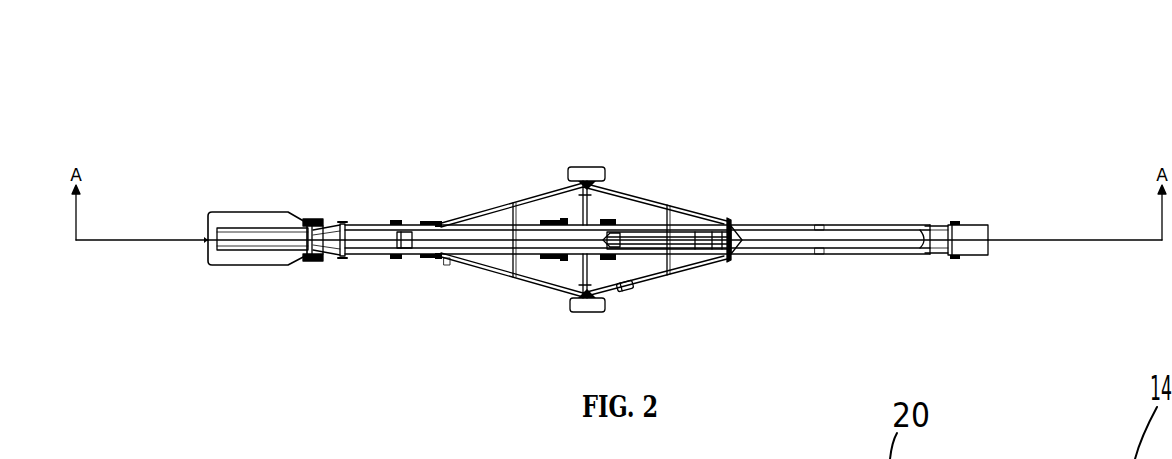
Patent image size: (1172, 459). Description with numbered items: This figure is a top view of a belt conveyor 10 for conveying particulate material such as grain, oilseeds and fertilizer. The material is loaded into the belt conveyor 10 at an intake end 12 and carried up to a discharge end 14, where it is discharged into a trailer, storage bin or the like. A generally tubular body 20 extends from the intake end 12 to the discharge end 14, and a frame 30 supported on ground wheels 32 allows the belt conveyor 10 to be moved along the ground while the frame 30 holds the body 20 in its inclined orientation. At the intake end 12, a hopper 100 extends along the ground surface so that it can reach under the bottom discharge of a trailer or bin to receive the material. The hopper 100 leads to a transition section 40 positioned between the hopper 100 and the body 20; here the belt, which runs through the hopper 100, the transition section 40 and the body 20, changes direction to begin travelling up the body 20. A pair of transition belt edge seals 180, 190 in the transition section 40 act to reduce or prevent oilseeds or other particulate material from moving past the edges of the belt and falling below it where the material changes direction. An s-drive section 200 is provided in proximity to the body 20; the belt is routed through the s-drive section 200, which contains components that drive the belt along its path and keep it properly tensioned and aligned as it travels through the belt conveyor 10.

The belt conveyor 10 is at (852, 142).
The intake end 12 is at (249, 205).
The discharge end 14 is at (985, 222).
The tubular body 20 is at (777, 225).
The frame 30 is at (672, 270).
The ground wheels 32 is at (583, 167).
The transition section 40 is at (330, 228).
The hopper 100 is at (252, 257).
The transition belt edge seal 180 is at (315, 253).
The transition belt edge seal 190 is at (320, 222).
The s-drive section 200 is at (570, 253).